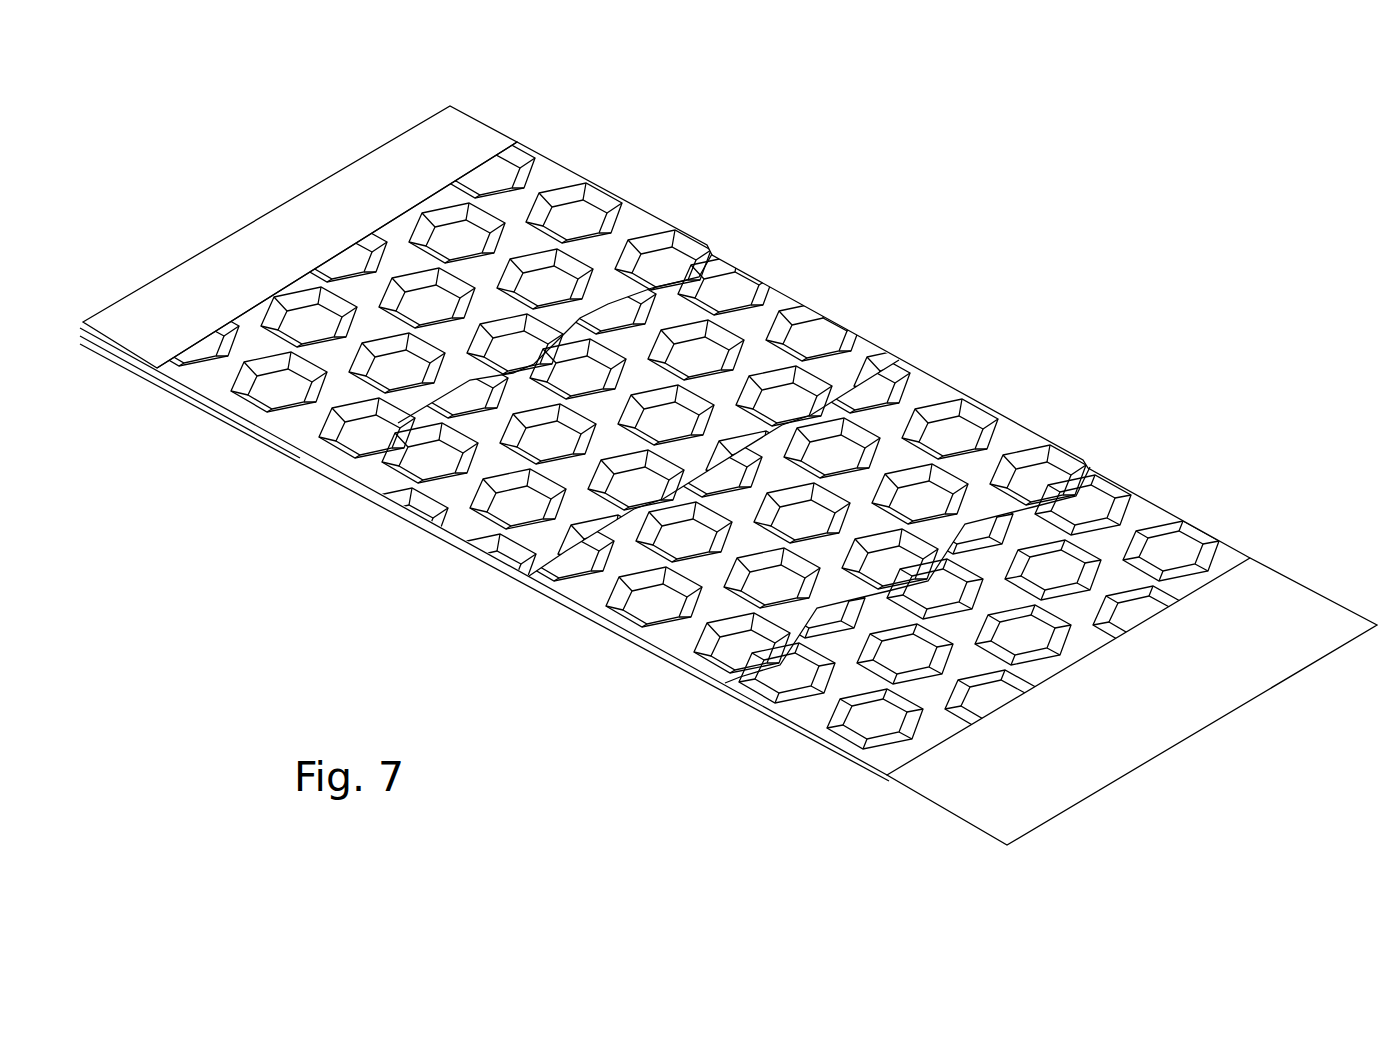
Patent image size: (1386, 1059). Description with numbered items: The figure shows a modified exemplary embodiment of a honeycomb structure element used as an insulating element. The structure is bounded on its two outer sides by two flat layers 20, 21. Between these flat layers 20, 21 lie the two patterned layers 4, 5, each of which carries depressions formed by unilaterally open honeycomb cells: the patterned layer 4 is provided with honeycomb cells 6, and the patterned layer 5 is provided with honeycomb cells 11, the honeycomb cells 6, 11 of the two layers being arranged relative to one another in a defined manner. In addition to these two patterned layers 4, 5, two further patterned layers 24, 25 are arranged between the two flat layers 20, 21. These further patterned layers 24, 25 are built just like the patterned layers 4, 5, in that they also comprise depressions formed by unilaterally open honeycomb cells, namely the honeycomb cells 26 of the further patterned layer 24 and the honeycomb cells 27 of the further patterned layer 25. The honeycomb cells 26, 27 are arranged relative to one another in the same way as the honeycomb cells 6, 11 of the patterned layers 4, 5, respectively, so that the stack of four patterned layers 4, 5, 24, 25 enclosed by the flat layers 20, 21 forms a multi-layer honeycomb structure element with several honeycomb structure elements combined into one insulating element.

The patterned layer 4 is at (920, 397).
The patterned layer 5 is at (887, 762).
The honeycomb cell 6 is at (647, 603).
The honeycomb cell 11 is at (773, 672).
The flat layer 20 is at (383, 180).
The flat layer 21 is at (1135, 710).
The further patterned layer 24 is at (467, 522).
The further patterned layer 25 is at (218, 377).
The honeycomb cell 26 is at (427, 448).
The honeycomb cell 27 is at (280, 395).